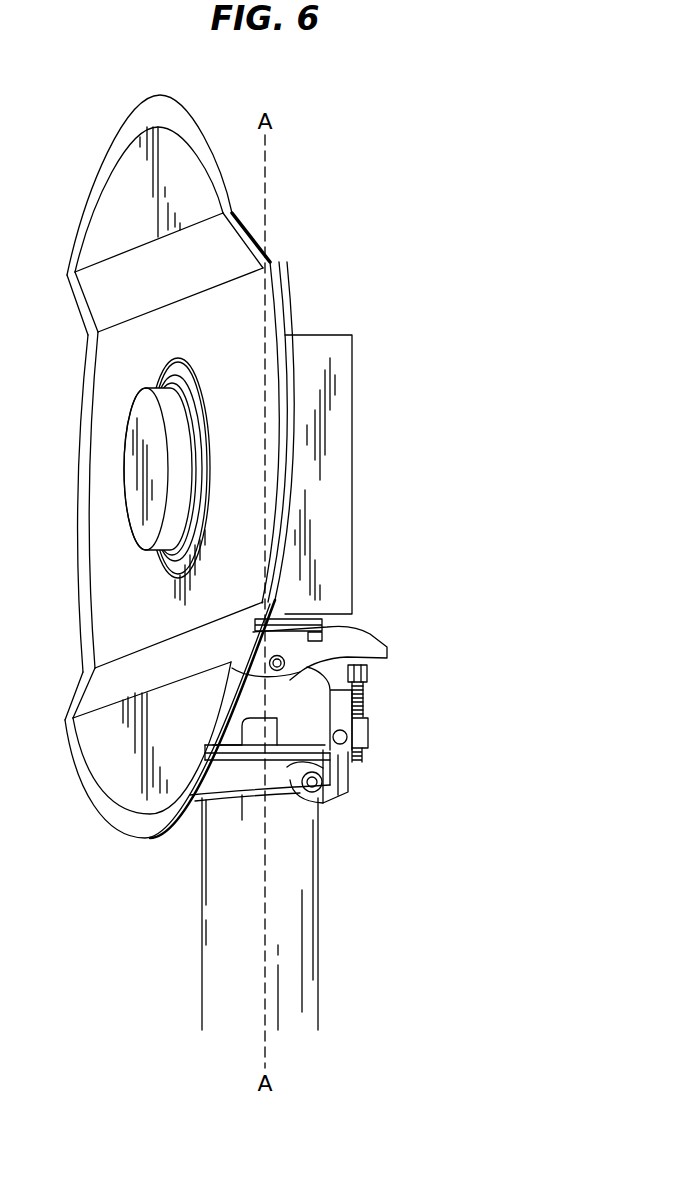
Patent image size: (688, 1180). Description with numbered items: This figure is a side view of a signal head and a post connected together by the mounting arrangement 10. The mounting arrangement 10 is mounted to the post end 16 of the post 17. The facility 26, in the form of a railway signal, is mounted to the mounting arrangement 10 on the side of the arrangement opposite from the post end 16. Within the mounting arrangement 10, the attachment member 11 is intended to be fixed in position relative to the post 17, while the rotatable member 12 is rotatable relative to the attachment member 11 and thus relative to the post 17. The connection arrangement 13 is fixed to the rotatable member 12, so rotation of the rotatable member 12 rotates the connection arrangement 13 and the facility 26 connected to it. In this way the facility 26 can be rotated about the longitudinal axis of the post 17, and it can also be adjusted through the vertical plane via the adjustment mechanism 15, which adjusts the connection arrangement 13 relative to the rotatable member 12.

The mounting arrangement 10 is at (368, 423).
The attachment member 11 is at (275, 777).
The rotatable member 12 is at (317, 712).
The connection arrangement 13 is at (347, 635).
The adjustment mechanism 15 is at (368, 703).
The post end 16 is at (208, 908).
The post 17 is at (308, 990).
The facility 26 is at (102, 412).